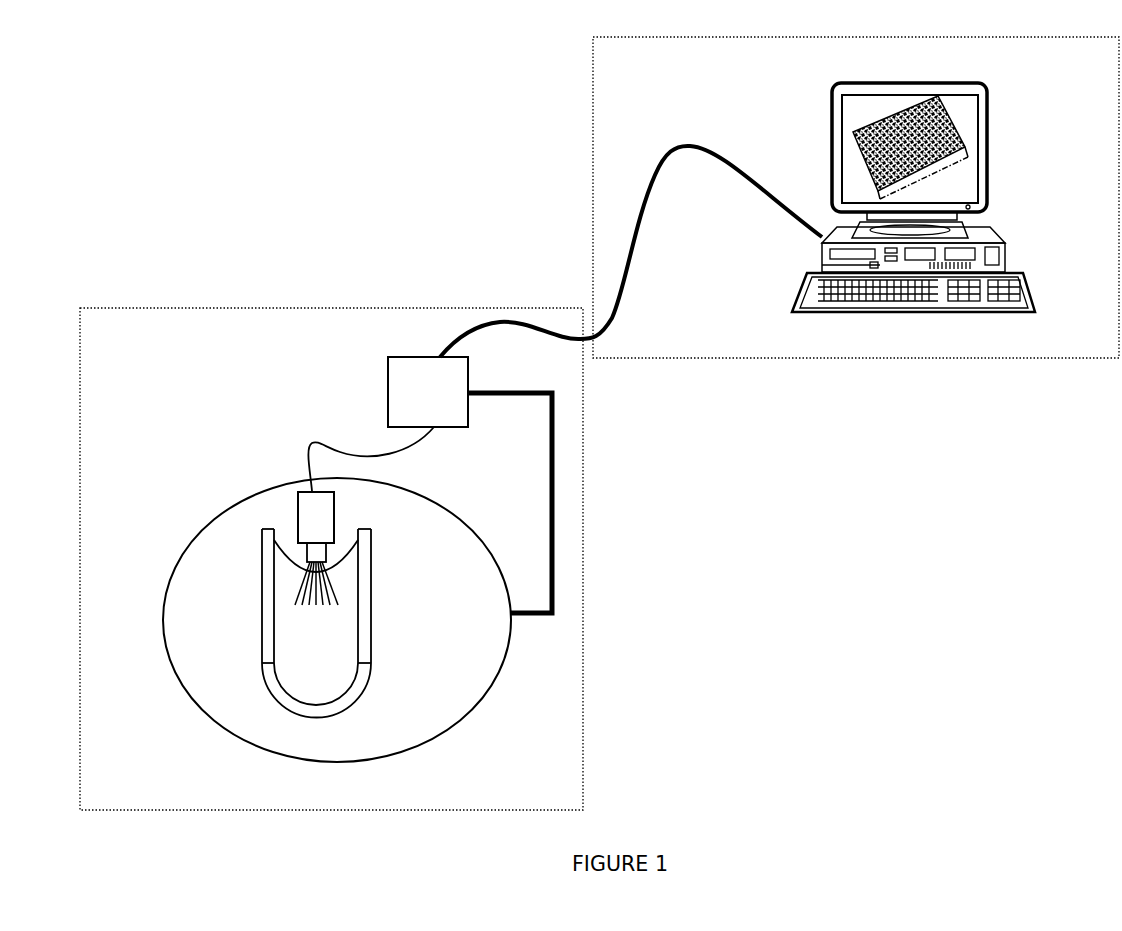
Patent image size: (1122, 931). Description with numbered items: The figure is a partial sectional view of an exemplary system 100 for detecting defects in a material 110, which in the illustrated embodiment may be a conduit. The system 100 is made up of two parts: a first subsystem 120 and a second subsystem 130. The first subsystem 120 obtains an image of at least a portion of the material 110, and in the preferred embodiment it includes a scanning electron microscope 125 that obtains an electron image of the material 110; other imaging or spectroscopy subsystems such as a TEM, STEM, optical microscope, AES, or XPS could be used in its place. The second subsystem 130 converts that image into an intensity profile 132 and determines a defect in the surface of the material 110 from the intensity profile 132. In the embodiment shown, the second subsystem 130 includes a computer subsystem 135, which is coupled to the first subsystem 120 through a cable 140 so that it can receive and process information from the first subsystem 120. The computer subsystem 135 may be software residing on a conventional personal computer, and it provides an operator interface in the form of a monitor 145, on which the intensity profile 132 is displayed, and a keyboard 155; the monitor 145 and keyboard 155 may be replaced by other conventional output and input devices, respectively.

The system 100 is at (201, 127).
The material 110 is at (262, 612).
The first subsystem 120 is at (584, 578).
The scanning electron microscope 125 is at (205, 463).
The second subsystem 130 is at (593, 65).
The intensity profile 132 is at (940, 91).
The computer subsystem 135 is at (803, 95).
The cable 140 is at (640, 233).
The monitor 145 is at (985, 135).
The keyboard 155 is at (800, 290).